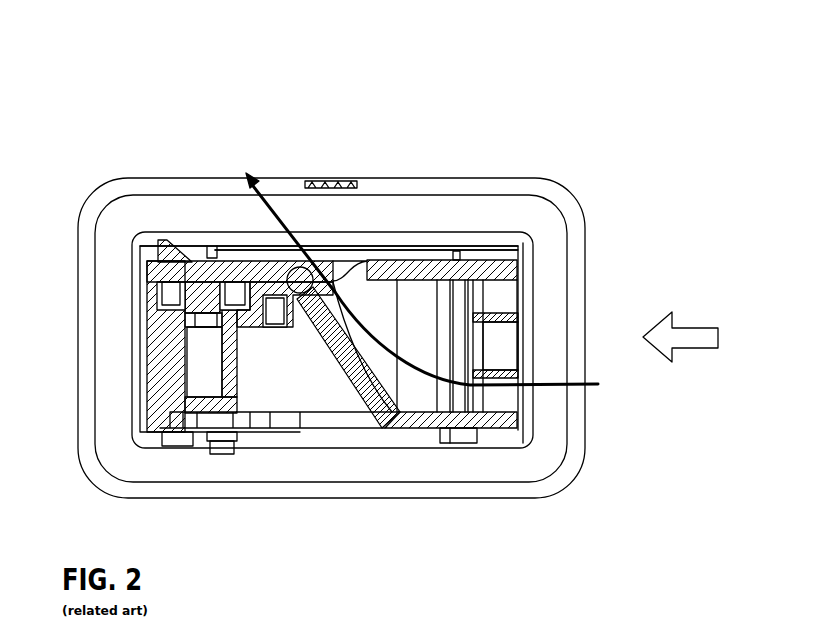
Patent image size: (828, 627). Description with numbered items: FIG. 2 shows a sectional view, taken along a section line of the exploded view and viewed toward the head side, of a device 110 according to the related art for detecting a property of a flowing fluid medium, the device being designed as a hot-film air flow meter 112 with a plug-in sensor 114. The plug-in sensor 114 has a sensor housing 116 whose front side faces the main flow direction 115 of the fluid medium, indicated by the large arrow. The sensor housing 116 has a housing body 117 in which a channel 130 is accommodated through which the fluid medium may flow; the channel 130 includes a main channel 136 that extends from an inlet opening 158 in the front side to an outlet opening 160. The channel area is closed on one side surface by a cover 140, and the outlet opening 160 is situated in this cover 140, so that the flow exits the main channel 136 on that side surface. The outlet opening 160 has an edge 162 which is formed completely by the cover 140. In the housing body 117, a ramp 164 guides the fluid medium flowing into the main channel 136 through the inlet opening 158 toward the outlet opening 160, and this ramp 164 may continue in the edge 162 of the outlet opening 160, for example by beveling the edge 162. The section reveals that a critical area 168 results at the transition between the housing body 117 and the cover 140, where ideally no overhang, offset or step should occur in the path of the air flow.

The device 110 is at (369, 249).
The hot-film air flow meter 112 is at (369, 249).
The plug-in sensor 114 is at (223, 152).
The main flow direction 115 is at (690, 349).
The sensor housing 116 is at (520, 435).
The housing body 117 is at (457, 437).
The channel 130 is at (472, 277).
The main channel 136 is at (422, 300).
The cover 140 is at (397, 280).
The inlet opening 158 is at (537, 330).
The outlet opening 160 is at (330, 232).
The edge 162 is at (304, 258).
The ramp 164 is at (366, 398).
The critical area 168 is at (297, 322).